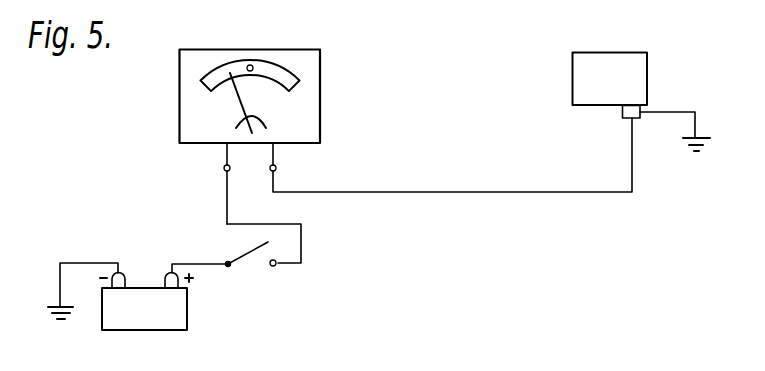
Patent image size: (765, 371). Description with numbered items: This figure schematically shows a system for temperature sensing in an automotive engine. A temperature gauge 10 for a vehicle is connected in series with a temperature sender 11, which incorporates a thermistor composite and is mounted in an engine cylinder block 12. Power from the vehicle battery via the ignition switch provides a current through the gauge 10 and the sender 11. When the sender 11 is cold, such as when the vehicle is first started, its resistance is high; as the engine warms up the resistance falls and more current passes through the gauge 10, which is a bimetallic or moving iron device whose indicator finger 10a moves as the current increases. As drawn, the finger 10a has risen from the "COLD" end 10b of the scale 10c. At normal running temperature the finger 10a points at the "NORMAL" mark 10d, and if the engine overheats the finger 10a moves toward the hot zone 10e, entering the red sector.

The temperature gauge 10 is at (362, 122).
The indicator finger 10a is at (233, 97).
The "COLD" end 10b is at (202, 83).
The scale 10c is at (240, 60).
The "NORMAL" mark 10d is at (253, 61).
The hot zone 10e is at (287, 77).
The temperature sender 11 is at (622, 117).
The engine cylinder block 12 is at (647, 68).